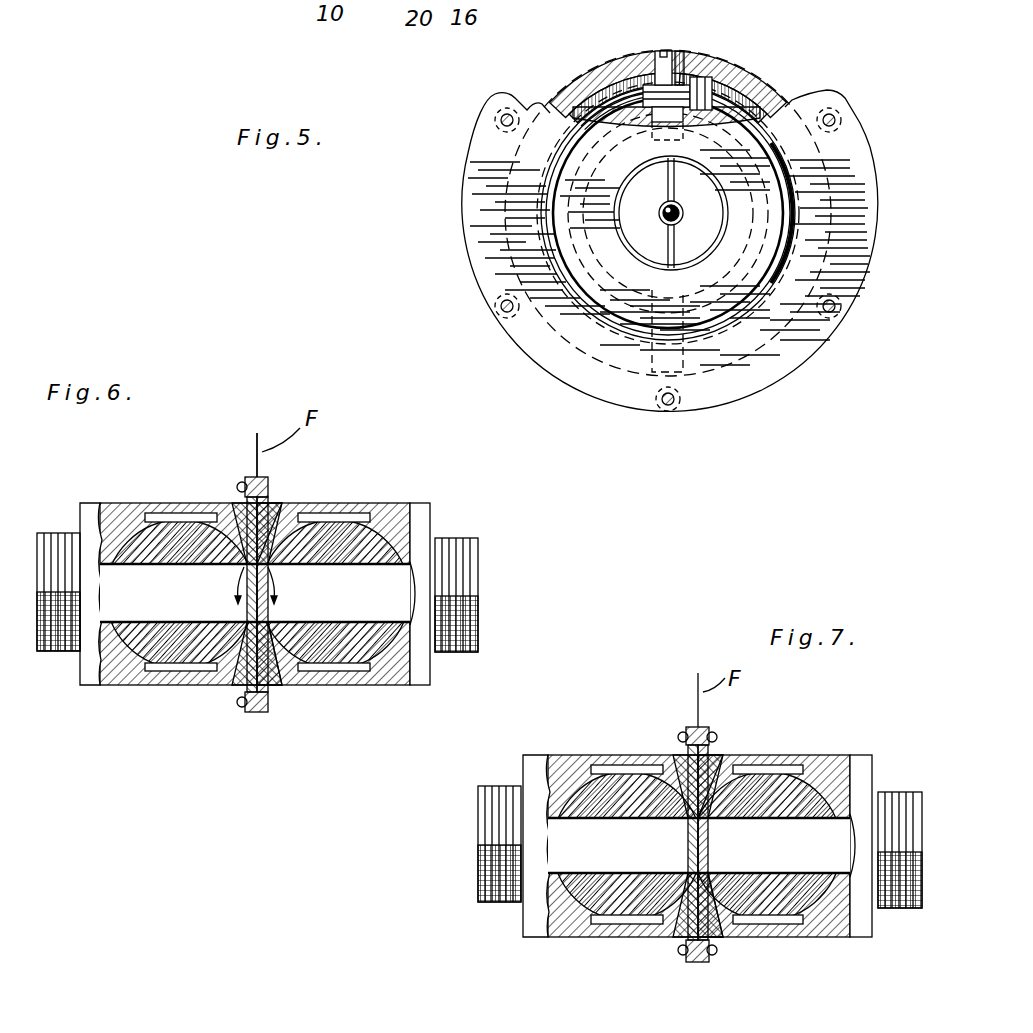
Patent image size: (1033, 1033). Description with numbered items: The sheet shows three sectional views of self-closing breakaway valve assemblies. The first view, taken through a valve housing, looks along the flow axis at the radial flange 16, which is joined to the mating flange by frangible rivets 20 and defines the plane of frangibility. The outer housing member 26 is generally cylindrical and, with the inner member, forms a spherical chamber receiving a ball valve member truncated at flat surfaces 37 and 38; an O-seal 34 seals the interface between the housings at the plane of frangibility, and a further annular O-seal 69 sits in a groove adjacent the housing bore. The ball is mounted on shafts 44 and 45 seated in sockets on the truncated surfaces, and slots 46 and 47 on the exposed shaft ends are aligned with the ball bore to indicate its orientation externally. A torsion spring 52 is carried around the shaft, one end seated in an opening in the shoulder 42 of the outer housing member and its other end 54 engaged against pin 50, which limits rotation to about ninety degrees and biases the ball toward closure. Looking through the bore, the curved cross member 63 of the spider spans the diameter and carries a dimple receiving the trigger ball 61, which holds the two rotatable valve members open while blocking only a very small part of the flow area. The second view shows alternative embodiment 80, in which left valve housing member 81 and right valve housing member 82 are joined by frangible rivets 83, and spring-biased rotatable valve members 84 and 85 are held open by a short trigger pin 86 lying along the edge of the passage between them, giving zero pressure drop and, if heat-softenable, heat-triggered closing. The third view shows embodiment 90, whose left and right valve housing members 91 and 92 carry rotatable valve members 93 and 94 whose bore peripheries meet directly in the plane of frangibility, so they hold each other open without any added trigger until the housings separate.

In FIG. 5, the radial flange 16 is at (537, 343).
In FIG. 5, the frangible rivets 20 is at (835, 118).
In FIG. 5, the outer housing member 26 is at (745, 62).
In FIG. 5, the O-seal 34 is at (793, 190).
In FIG. 5, the truncated surface 37 is at (590, 100).
In FIG. 5, the truncated surface 38 is at (722, 333).
In FIG. 5, the shoulder 42 is at (617, 97).
In FIG. 5, the shaft 44 is at (676, 50).
In FIG. 5, the shaft 45 is at (632, 360).
In FIG. 5, the slot 46 is at (660, 50).
In FIG. 5, the slot 47 is at (700, 360).
In FIG. 5, the pin 50 is at (727, 92).
In FIG. 5, the torsion spring 52 is at (643, 84).
In FIG. 5, the spring end 54 is at (705, 80).
In FIG. 5, the trigger ball 61 is at (662, 210).
In FIG. 5, the curved cross member 63 is at (668, 245).
In FIG. 5, the annular O-seal 69 is at (830, 263).
In FIG. 6, the self-closing breakaway valve assembly 80 is at (187, 693).
In FIG. 6, the left valve housing member 81 is at (135, 500).
In FIG. 6, the right valve housing member 82 is at (392, 503).
In FIG. 6, the frangible rivets 83 is at (272, 487).
In FIG. 6, the rotatable valve member 84 is at (175, 527).
In FIG. 6, the rotatable valve member 85 is at (337, 528).
In FIG. 6, the trigger pin 86 is at (235, 510).
In FIG. 7, the self-closing breakaway valve assembly 90 is at (583, 942).
In FIG. 7, the left valve housing member 91 is at (573, 757).
In FIG. 7, the right valve housing member 92 is at (813, 757).
In FIG. 7, the rotatable valve member 93 is at (637, 775).
In FIG. 7, the rotatable valve member 94 is at (770, 777).